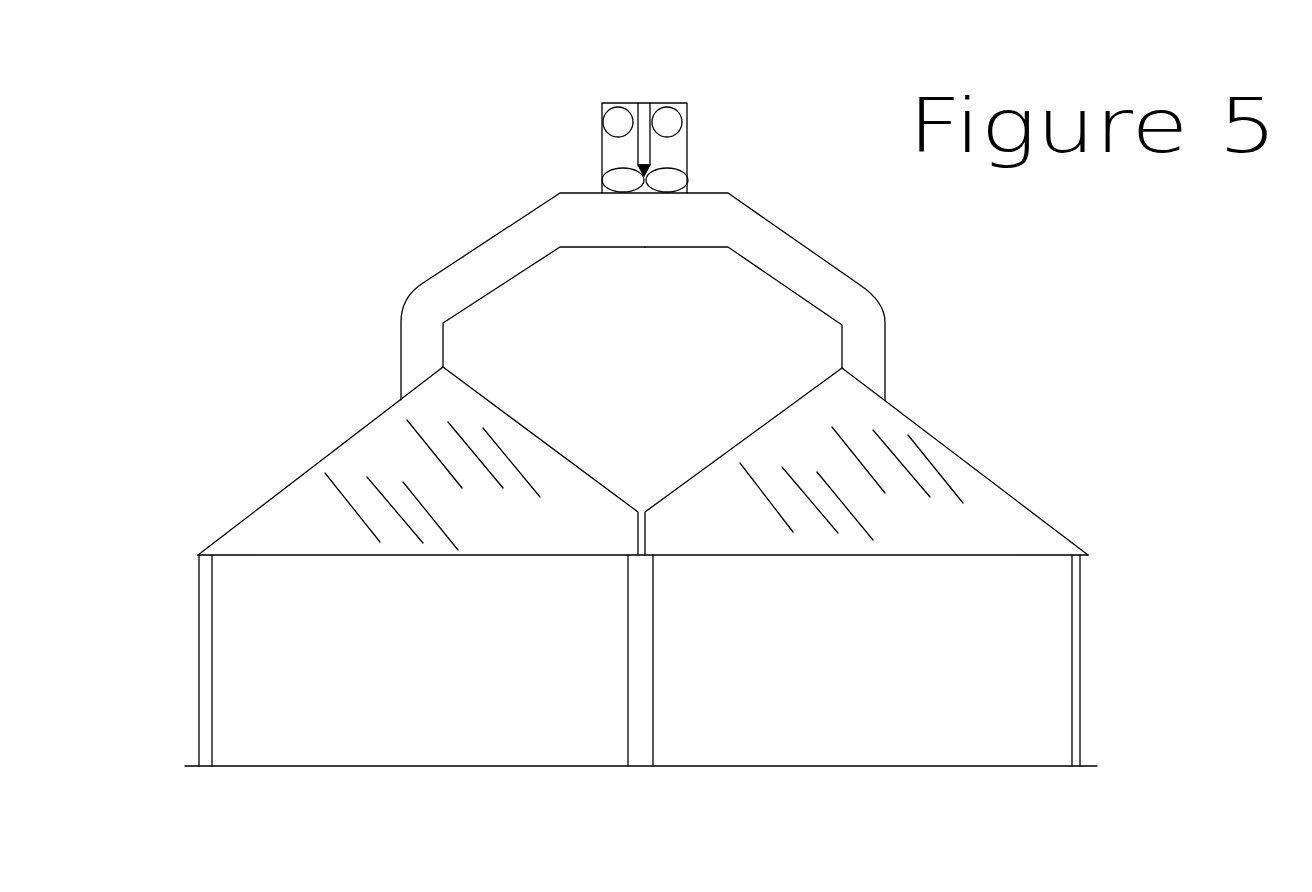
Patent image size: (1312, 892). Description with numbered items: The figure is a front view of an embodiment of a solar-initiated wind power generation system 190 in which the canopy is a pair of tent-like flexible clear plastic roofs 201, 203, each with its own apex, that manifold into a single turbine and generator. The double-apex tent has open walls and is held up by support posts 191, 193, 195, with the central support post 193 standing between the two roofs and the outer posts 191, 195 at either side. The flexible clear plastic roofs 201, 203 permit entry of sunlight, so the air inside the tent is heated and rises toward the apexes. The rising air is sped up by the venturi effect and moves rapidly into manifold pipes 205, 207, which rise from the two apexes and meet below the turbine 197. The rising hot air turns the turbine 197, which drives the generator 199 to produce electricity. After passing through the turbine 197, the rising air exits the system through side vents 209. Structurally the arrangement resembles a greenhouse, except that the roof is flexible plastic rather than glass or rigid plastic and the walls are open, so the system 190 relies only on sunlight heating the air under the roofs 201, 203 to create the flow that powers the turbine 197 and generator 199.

The solar-initiated wind power generation system 190 is at (1092, 372).
The support post 191 is at (207, 712).
The support post 193 is at (635, 707).
The support post 195 is at (1075, 698).
The turbine 197 is at (667, 180).
The generator 199 is at (655, 133).
The flexible clear plastic roof 201 is at (353, 482).
The flexible clear plastic roof 203 is at (957, 473).
The manifold pipe 205 is at (417, 332).
The manifold pipe 207 is at (855, 332).
The side vent 209 is at (612, 120).